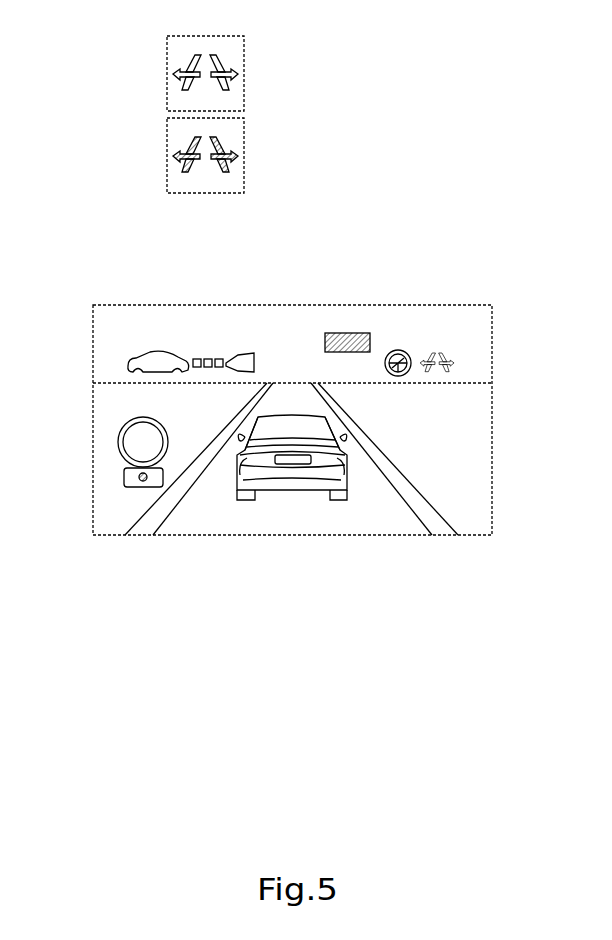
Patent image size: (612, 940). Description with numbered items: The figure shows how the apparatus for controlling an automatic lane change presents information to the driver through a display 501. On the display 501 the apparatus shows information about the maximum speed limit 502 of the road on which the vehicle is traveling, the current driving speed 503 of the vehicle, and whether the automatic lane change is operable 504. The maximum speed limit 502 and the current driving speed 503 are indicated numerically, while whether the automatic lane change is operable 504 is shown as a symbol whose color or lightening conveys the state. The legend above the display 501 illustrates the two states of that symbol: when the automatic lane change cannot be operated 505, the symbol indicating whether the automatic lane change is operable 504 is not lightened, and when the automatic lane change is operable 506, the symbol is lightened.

The display 501 is at (493, 458).
The maximum speed limit 502 is at (118, 442).
The current driving speed 503 is at (293, 340).
The whether the automatic lane change is operable 504 is at (442, 325).
The automatic lane change cannot be operated 505 is at (311, 73).
The automatic lane change is operable 506 is at (298, 155).